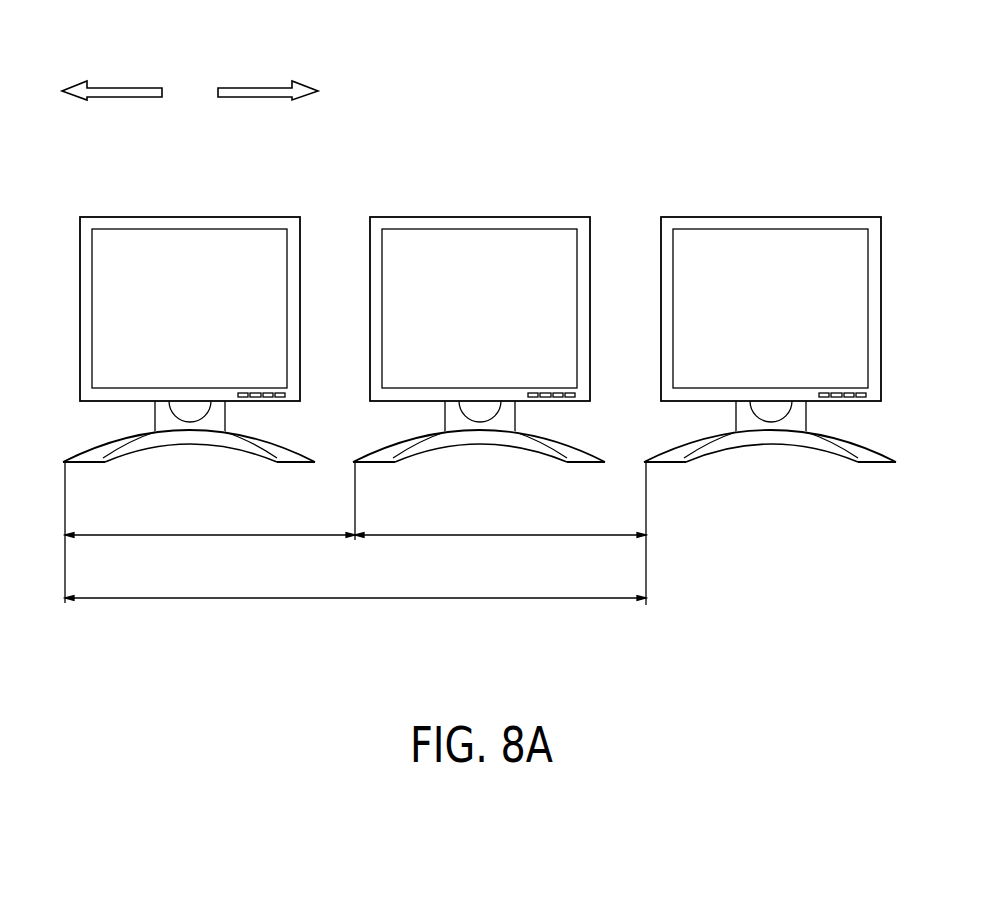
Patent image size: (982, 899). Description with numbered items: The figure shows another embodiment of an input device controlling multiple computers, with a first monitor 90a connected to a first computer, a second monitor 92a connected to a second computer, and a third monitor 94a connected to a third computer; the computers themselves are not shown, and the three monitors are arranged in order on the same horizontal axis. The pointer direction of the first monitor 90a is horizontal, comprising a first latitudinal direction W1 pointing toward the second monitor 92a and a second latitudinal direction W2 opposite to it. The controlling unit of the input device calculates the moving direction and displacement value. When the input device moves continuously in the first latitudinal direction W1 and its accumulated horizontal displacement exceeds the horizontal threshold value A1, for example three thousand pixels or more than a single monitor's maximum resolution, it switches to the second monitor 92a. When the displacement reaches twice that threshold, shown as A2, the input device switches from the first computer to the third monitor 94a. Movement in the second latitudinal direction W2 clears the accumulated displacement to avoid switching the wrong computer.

The first monitor 90a is at (188, 216).
The second monitor 92a is at (478, 216).
The third monitor 94a is at (773, 216).
The first latitudinal direction W1 is at (256, 87).
The second latitudinal direction W2 is at (122, 87).
The horizontal threshold value A1 is at (355, 533).
The horizontal displacement value twice the horizontal threshold A2 is at (355, 584).